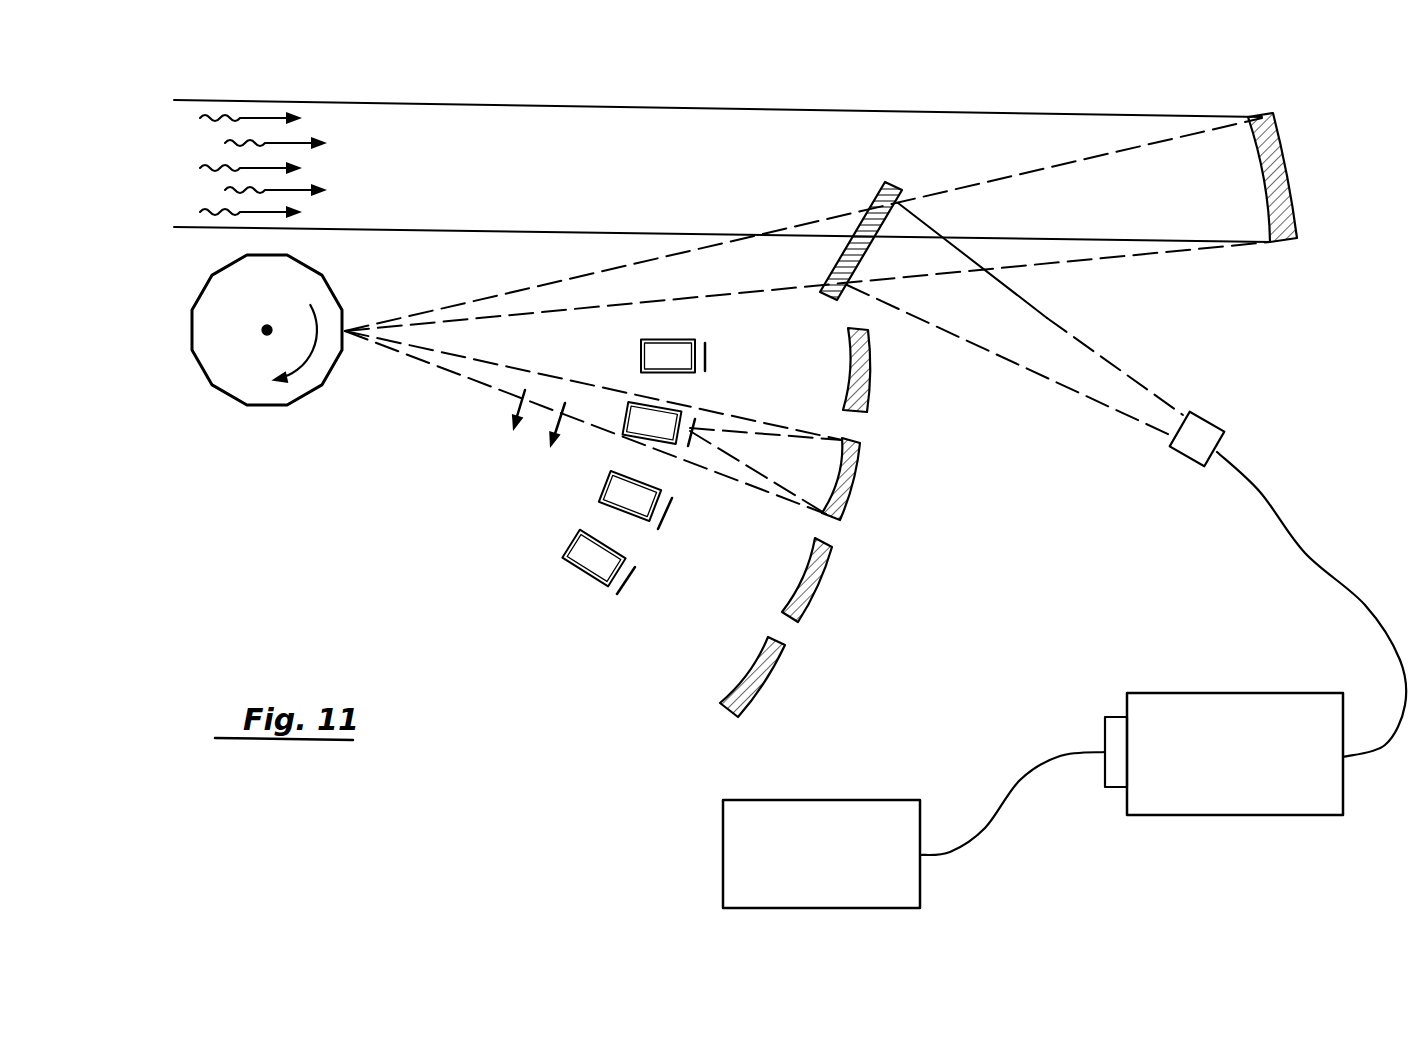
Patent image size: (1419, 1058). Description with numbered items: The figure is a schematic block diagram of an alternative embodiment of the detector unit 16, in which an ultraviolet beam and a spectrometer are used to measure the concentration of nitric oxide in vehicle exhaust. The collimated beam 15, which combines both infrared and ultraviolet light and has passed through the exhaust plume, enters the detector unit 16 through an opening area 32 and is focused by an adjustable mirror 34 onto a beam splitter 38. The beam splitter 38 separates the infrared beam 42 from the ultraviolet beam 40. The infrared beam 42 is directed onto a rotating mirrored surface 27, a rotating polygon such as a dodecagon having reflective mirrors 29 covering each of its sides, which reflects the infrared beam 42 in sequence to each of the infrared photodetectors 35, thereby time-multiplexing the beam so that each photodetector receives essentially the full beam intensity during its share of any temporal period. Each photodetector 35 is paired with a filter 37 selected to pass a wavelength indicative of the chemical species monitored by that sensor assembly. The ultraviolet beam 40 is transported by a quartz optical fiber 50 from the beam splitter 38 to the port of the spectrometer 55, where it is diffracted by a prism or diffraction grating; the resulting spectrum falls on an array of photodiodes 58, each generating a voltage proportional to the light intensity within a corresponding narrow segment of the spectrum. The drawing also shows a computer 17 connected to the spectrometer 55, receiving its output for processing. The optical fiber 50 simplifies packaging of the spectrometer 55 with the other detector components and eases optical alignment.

The detector unit 16 is at (519, 96).
The opening area 32 is at (180, 172).
The collimated beam 15 is at (318, 150).
The rotating mirrored surface 27 is at (283, 305).
The reflective mirrors 29 is at (197, 362).
The infrared beam 42 is at (470, 300).
The beam splitter 38 is at (882, 184).
The adjustable mirror 34 is at (1288, 183).
The ultraviolet beam 40 is at (1093, 352).
The quartz optical fiber 50 is at (1306, 552).
The spectrometer 55 is at (1155, 693).
The array of photodiodes 58 is at (1110, 788).
The computer 17 is at (823, 800).
The infrared photodetectors 35 is at (641, 355).
The filter 37 is at (708, 357).